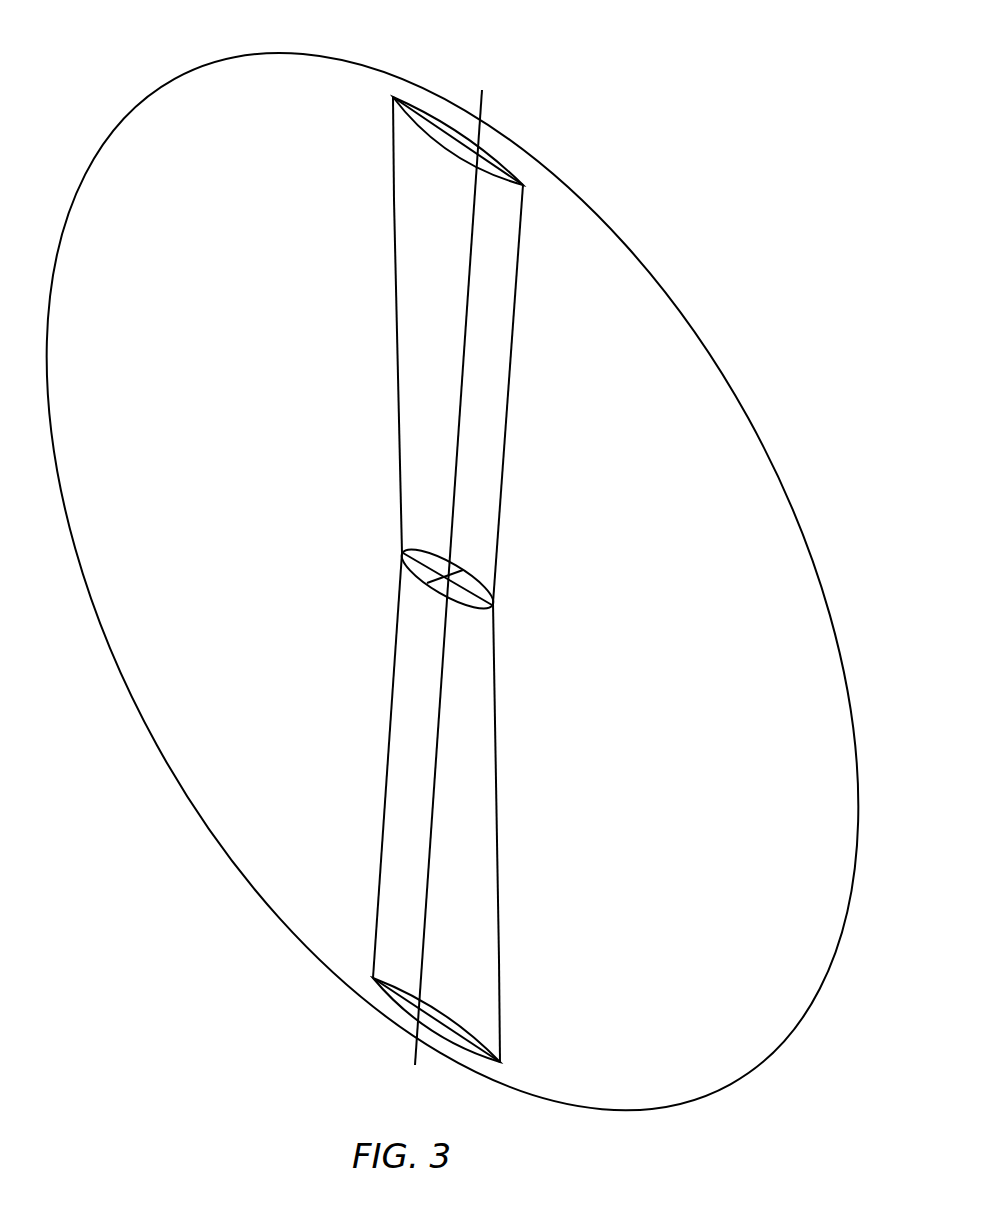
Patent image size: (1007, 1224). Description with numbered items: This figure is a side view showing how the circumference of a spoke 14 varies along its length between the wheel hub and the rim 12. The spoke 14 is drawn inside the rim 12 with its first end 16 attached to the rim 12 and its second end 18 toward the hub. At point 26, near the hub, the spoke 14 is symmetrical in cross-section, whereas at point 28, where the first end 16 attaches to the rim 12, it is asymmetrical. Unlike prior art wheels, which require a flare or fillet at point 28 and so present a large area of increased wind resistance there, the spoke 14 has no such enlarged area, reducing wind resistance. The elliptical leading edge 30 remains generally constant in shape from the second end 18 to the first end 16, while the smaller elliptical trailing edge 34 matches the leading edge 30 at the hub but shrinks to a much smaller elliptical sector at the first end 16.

The rim 12 is at (768, 448).
The spoke 14 is at (472, 437).
The first end 16 is at (418, 227).
The second end 18 is at (425, 480).
The point 26 is at (493, 603).
The point 28 is at (480, 141).
The elliptical leading edge 30 is at (548, 168).
The smaller elliptical trailing edge 34 is at (393, 98).